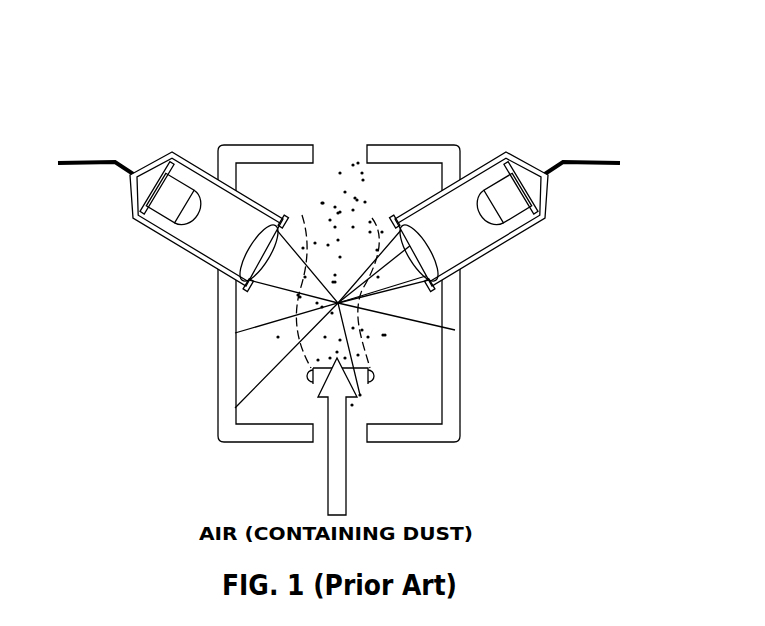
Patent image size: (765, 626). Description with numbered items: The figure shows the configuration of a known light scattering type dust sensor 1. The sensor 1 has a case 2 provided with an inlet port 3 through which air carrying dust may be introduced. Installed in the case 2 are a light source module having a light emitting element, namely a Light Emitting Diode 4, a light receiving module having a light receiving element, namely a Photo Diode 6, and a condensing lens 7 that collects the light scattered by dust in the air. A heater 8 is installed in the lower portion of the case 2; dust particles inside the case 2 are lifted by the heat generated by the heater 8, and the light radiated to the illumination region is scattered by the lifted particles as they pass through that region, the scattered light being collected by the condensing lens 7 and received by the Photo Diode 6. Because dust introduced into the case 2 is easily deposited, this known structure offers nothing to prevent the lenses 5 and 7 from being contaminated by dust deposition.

The light scattering type dust sensor 1 is at (339, 294).
The case 2 is at (463, 378).
The inlet port 3 is at (315, 430).
The Light Emitting Diode (LED) 4 is at (505, 206).
The lens 5 is at (435, 234).
The Photo Diode (PD) 6 is at (195, 206).
The condensing lens 7 is at (273, 230).
The heater 8 is at (363, 379).